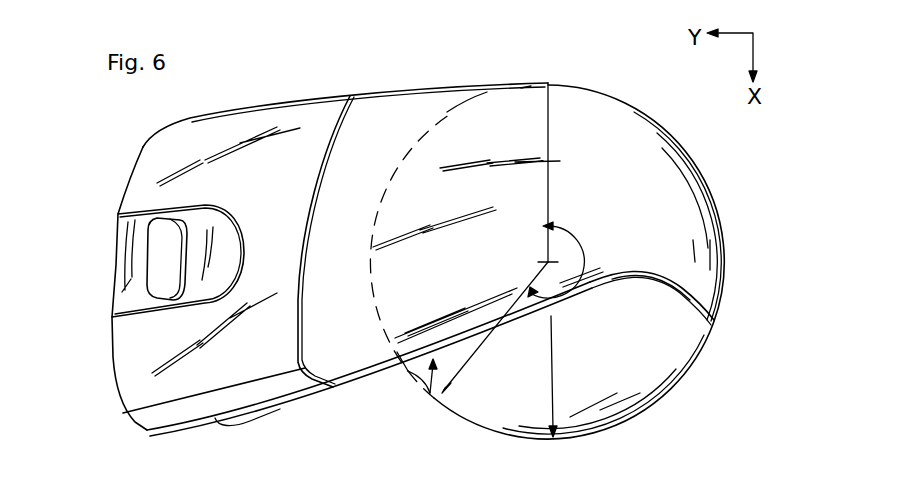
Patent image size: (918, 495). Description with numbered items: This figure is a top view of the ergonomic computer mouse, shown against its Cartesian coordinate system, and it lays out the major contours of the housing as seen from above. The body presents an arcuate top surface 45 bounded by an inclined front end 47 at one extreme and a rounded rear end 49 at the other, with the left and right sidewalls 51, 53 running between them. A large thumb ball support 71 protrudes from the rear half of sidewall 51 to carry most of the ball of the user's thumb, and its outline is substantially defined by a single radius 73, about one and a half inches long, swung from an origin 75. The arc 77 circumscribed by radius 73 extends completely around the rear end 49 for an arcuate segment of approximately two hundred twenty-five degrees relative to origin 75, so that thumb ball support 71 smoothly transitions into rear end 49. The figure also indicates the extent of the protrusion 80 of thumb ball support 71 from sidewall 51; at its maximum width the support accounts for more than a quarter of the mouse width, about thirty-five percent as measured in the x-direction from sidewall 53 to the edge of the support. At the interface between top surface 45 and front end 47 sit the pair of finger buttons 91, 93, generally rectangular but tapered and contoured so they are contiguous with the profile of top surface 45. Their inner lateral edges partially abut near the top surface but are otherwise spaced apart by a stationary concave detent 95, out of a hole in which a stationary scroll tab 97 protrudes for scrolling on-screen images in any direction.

The arcuate top surface 45 is at (428, 100).
The inclined front end 47 is at (102, 360).
The rounded rear end 49 is at (706, 162).
The left sidewall 51 is at (430, 393).
The right sidewall 53 is at (377, 80).
The thumb ball support 71 is at (650, 345).
The radius 73 is at (548, 182).
The origin 75 is at (546, 260).
The arc 77 is at (570, 260).
The protrusion 80 is at (553, 347).
The finger button 91 is at (128, 393).
The finger button 93 is at (160, 157).
The concave detent 95 is at (130, 278).
The scroll tab 97 is at (167, 243).